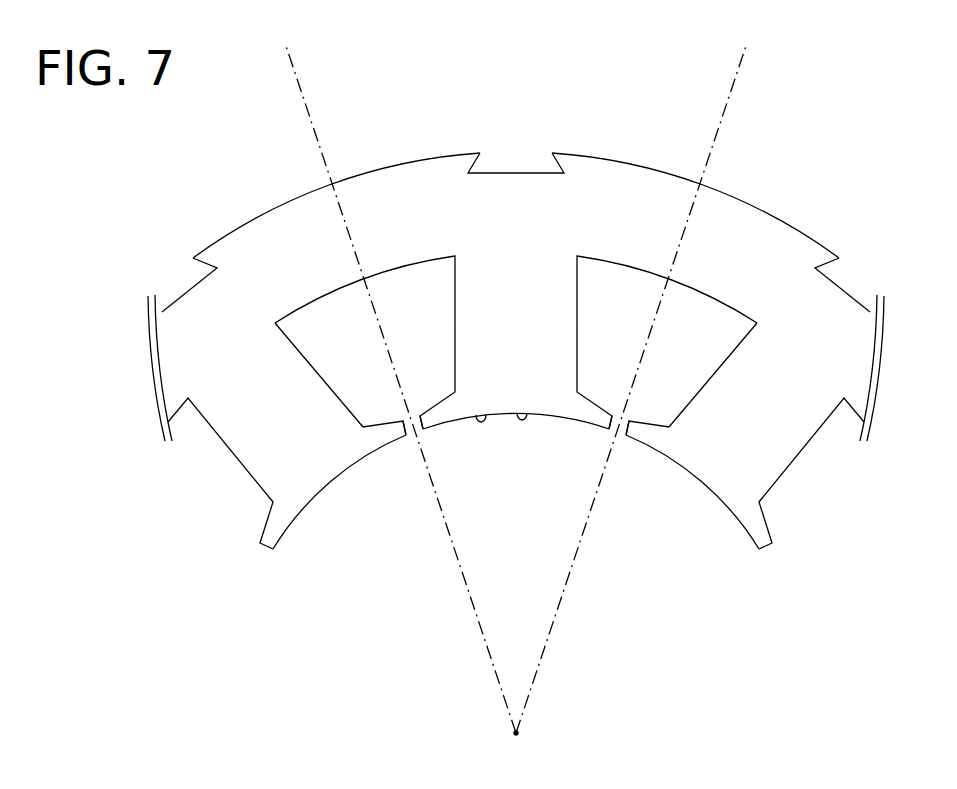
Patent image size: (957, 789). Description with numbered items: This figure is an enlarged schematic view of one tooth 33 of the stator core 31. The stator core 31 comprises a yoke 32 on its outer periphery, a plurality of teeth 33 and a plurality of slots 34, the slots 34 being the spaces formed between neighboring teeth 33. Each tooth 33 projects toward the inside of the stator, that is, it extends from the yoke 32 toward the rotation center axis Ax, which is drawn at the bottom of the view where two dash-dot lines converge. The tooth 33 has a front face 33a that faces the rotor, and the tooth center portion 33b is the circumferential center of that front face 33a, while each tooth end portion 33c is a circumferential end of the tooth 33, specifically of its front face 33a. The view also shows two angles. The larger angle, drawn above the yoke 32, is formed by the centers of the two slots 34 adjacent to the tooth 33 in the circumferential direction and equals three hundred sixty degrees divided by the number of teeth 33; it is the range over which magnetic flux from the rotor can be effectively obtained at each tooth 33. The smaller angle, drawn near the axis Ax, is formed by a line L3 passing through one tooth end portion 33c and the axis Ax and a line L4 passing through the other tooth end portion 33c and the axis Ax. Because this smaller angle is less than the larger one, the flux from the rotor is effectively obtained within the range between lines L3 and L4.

The stator core 31 is at (514, 173).
The yoke 32 is at (385, 195).
The tooth 33 is at (515, 303).
The front face 33a is at (485, 413).
The tooth center portion 33b is at (528, 412).
The tooth end portion 33c is at (417, 432).
The slot 34 is at (358, 312).
The line L3 is at (393, 354).
The line L4 is at (637, 354).
The axis Ax is at (515, 735).